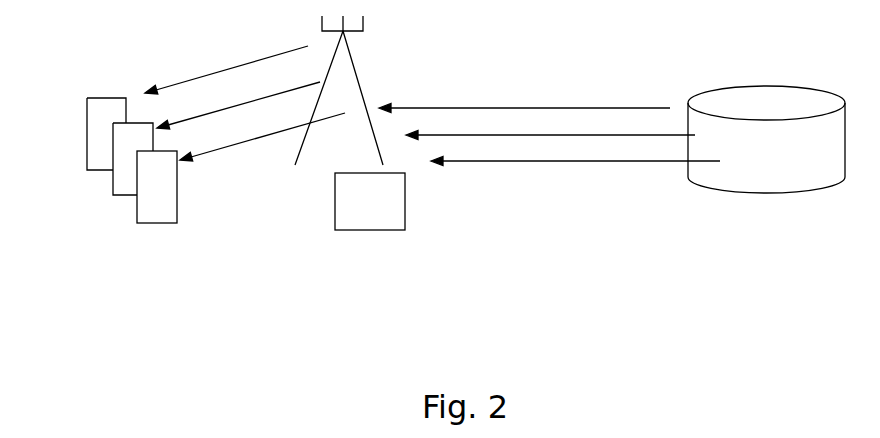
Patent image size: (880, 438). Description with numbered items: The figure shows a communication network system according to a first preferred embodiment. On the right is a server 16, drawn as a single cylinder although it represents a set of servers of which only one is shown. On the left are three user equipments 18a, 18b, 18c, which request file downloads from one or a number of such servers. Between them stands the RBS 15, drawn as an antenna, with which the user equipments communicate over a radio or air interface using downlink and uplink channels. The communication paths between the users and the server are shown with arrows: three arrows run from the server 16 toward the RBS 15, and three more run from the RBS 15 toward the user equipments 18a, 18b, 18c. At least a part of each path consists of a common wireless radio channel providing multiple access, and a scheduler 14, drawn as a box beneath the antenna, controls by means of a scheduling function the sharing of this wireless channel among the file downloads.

The scheduler 14 is at (370, 201).
The RBS 15 is at (350, 55).
The server 16 is at (766, 139).
The user equipment 18a is at (93, 170).
The user equipment 18b is at (118, 195).
The user equipment 18c is at (158, 223).